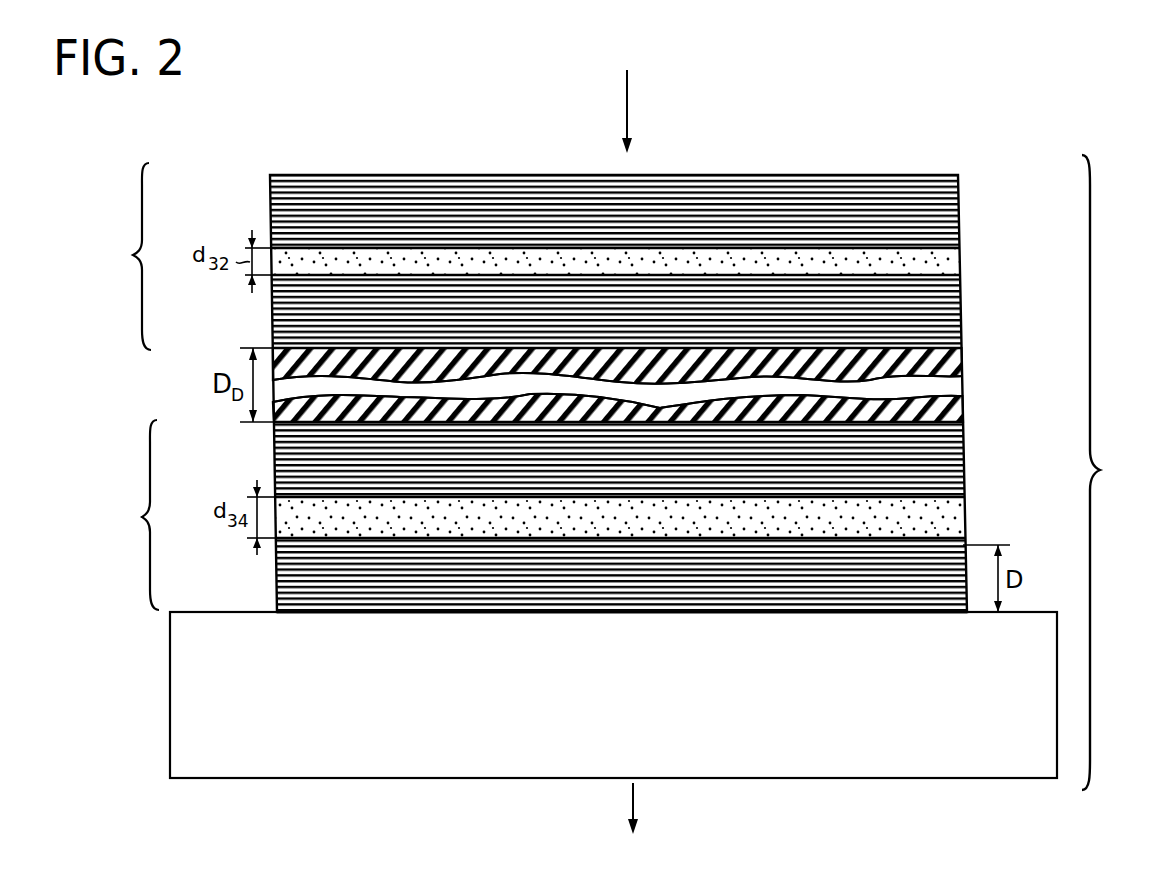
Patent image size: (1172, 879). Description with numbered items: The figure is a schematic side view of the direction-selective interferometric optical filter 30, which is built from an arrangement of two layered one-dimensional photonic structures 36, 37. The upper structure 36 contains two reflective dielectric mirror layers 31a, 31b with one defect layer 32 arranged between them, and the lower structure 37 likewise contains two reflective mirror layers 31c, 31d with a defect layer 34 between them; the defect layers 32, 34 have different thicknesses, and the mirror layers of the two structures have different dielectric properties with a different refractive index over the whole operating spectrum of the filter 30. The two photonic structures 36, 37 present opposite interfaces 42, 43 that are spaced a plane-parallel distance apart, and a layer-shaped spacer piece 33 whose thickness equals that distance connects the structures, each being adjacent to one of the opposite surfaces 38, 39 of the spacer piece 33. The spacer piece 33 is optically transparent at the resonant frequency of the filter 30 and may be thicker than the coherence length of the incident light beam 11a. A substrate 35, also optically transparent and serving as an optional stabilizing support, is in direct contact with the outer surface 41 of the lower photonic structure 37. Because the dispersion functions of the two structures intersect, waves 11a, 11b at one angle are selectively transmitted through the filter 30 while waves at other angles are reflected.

The incident light beam 11a is at (630, 100).
The transmitted wave 11b is at (636, 805).
The direction-selective interferometric optical filter 30 is at (1112, 472).
The reflective mirror layer 31a is at (265, 208).
The reflective mirror layer 31b is at (268, 320).
The reflective mirror layer 31c is at (271, 460).
The reflective mirror layer 31d is at (273, 573).
The defect layer 32 is at (973, 267).
The spacer piece 33 is at (972, 391).
The defect layer 34 is at (975, 520).
The substrate 35 is at (1028, 614).
The layered one-dimensional photonic structure 36 is at (117, 256).
The layered one-dimensional photonic structure 37 is at (127, 515).
The surface of spacer piece 38 is at (960, 326).
The surface of spacer piece 39 is at (960, 440).
The outer surface 41 is at (958, 618).
The interface 42 is at (961, 365).
The interface 43 is at (963, 407).